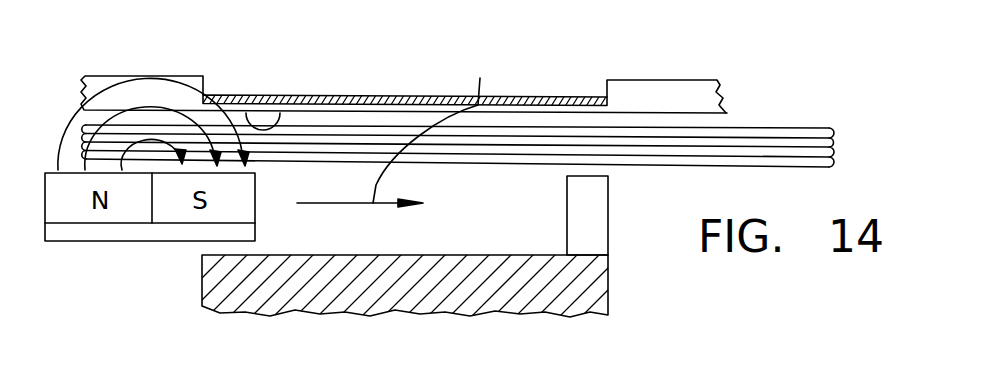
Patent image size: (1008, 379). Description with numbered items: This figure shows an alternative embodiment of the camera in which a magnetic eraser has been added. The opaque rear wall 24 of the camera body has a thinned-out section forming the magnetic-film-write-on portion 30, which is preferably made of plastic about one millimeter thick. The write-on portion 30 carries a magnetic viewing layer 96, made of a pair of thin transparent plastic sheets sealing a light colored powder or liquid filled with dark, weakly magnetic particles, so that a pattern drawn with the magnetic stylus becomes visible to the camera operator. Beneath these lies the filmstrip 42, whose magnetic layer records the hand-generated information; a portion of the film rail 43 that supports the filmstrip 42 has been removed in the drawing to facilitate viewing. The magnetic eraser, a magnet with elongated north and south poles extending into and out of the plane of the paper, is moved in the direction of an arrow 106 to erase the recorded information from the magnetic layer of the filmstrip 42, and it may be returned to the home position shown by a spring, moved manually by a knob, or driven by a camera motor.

The rear wall 24 is at (102, 77).
The magnetic-film-write-on portion 30 is at (280, 112).
The magnetic viewing layer 96 is at (410, 94).
The arrow 106 is at (409, 128).
The filmstrip 42 is at (779, 95).
The film rail 43 is at (608, 225).